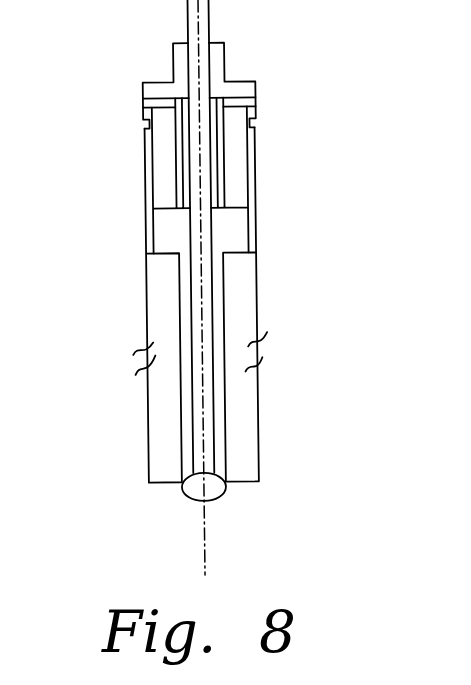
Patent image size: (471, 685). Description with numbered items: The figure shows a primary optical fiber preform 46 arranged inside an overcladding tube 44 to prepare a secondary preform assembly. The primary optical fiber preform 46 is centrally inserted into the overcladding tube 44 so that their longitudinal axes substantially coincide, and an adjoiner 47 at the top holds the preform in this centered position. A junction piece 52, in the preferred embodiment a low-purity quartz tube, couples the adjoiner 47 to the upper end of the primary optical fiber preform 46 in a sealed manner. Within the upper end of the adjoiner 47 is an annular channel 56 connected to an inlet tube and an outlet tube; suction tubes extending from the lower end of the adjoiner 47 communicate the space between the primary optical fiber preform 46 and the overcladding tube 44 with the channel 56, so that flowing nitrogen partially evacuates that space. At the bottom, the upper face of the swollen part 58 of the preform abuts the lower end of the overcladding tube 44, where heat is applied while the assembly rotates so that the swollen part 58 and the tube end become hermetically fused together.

The overcladding tube 44 is at (254, 358).
The primary optical fiber preform 46 is at (196, 288).
The adjoiner 47 is at (242, 82).
The junction piece 52 is at (253, 191).
The annular channel 56 is at (189, 105).
The swollen part 58 is at (202, 498).